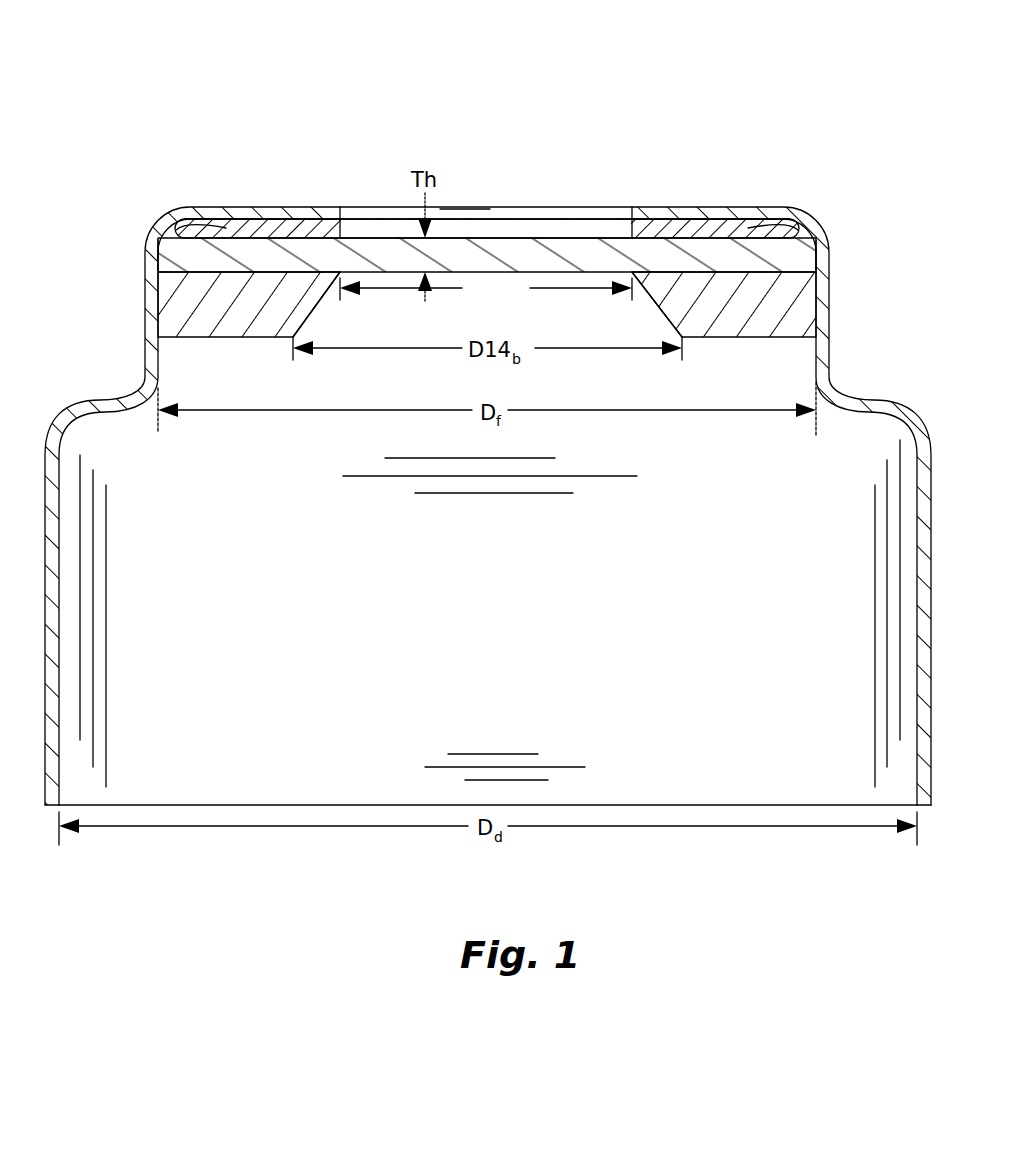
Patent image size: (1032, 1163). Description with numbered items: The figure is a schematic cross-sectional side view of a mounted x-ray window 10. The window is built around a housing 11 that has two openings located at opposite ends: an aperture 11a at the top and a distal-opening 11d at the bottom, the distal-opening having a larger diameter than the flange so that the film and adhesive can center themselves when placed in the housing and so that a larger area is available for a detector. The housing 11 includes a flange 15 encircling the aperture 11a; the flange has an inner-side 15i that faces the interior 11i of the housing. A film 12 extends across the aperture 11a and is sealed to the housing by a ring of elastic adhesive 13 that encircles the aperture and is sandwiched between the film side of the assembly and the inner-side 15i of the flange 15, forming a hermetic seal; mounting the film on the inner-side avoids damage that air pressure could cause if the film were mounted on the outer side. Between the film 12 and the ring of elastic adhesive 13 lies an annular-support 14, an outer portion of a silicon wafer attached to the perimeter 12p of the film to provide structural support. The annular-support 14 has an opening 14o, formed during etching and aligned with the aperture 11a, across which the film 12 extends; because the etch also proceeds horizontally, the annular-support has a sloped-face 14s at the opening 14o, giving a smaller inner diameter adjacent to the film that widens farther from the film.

The mounted x-ray window 10 is at (147, 68).
The housing 11 is at (137, 397).
The aperture 11a is at (481, 180).
The distal-opening 11d is at (417, 858).
The interior 11i is at (522, 585).
The film 12 is at (506, 265).
The perimeter of the film 12p is at (857, 276).
The ring of elastic adhesive 13 is at (303, 228).
The annular-support 14 is at (231, 313).
The opening of the annular-support 14o is at (588, 316).
The sloped-face 14s is at (703, 303).
The flange 15 is at (276, 213).
The inner-side of the flange 15i is at (890, 242).